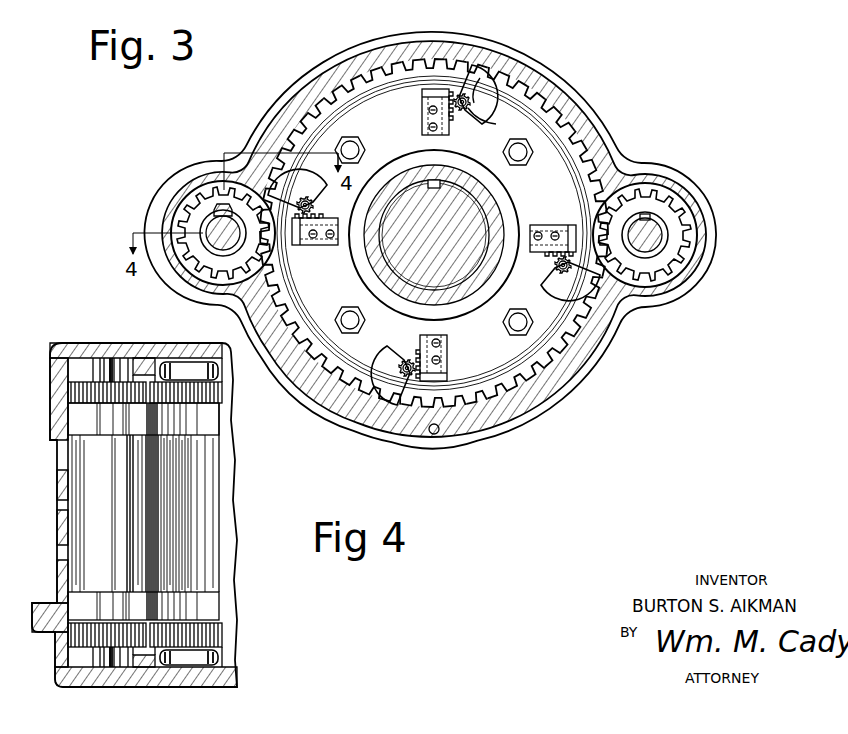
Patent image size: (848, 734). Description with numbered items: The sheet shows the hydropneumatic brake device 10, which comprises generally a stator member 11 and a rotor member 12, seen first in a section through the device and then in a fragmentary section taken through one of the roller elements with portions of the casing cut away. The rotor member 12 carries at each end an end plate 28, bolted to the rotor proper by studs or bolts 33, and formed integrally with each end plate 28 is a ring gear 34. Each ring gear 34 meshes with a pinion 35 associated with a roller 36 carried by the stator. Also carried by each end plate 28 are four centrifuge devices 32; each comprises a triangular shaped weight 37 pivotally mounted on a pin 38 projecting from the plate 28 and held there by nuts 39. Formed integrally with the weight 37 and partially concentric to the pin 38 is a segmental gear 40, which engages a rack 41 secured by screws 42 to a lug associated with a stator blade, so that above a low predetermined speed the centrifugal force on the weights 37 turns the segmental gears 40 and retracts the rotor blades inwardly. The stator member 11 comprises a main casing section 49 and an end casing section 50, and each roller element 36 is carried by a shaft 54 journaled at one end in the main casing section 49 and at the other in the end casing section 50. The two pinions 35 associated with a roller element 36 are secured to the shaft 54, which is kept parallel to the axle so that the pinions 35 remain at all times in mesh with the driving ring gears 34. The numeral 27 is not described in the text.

In FIG. 3, the hydropneumatic brake device 10 is at (456, 449).
In FIG. 4, the hydropneumatic brake device 10 is at (246, 606).
In FIG. 3, the stator member 11 is at (597, 72).
In FIG. 3, the rotor member 12 is at (551, 128).
In FIG. 4, the rotor member 12 is at (202, 508).
In FIG. 3, the pawl block 27 is at (437, 88).
In FIG. 4, the end plate 28 is at (213, 418).
In FIG. 3, the centrifuge device 32 is at (499, 92).
In FIG. 4, the centrifuge device 32 is at (180, 370).
In FIG. 3, the stud or bolt 33 is at (352, 148).
In FIG. 3, the ring gear 34 is at (381, 96).
In FIG. 4, the ring gear 34 is at (213, 392).
In FIG. 3, the pinion 35 is at (191, 193).
In FIG. 4, the pinion 35 is at (80, 392).
In FIG. 3, the roller element 36 is at (188, 206).
In FIG. 4, the roller element 36 is at (87, 438).
In FIG. 3, the triangular shaped weight 37 is at (551, 72).
In FIG. 3, the pin 38 is at (481, 126).
In FIG. 3, the nut 39 is at (491, 90).
In FIG. 3, the segmental gear 40 is at (465, 97).
In FIG. 3, the rack 41 is at (428, 108).
In FIG. 3, the screw 42 is at (428, 126).
In FIG. 4, the main casing section 49 is at (112, 341).
In FIG. 4, the end casing section 50 is at (232, 680).
In FIG. 3, the shaft 54 is at (226, 240).
In FIG. 4, the shaft 54 is at (112, 425).